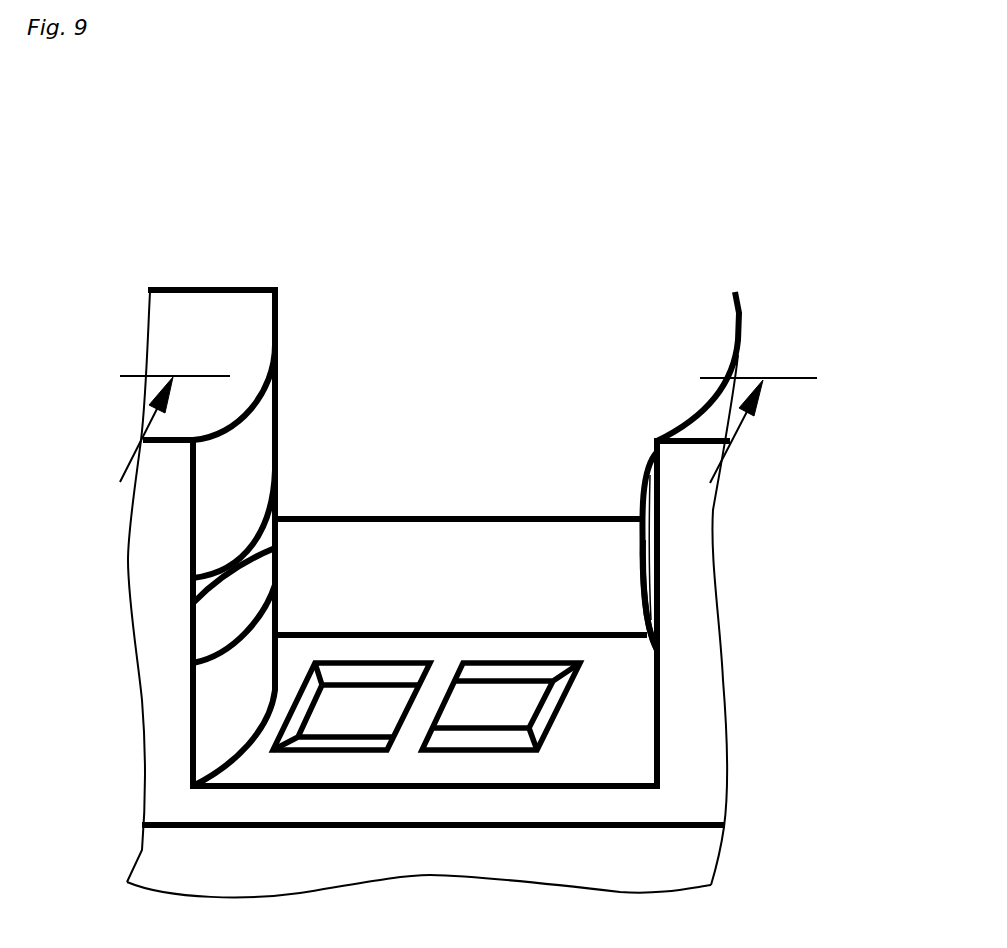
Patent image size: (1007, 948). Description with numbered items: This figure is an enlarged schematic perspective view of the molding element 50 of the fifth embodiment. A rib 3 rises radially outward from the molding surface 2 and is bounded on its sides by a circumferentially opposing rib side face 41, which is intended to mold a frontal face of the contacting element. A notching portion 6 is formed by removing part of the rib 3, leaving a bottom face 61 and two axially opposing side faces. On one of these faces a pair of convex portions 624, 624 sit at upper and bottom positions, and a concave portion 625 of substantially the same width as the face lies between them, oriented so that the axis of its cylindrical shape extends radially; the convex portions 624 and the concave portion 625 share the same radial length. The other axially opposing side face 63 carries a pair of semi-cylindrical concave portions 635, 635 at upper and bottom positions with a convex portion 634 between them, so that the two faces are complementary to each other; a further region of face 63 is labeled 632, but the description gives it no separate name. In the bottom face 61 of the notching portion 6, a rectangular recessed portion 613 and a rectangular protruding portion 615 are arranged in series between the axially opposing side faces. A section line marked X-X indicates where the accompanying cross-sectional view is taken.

The molding element 50 is at (327, 267).
The notching portion 6 is at (463, 377).
The concave portion 635 is at (653, 452).
The side wall portion 632 is at (652, 455).
The rib 3 is at (733, 373).
The convex portion 624 is at (222, 488).
The concave portion 625 is at (262, 545).
The convex portion 634 is at (640, 568).
The axially opposing side face 63 is at (650, 678).
The molding surface 2 is at (428, 612).
The bottom face 61 is at (642, 766).
The rectangular recessed portion 613 is at (373, 722).
The rectangular protruding portion 615 is at (478, 708).
The rib side face 41 is at (148, 623).